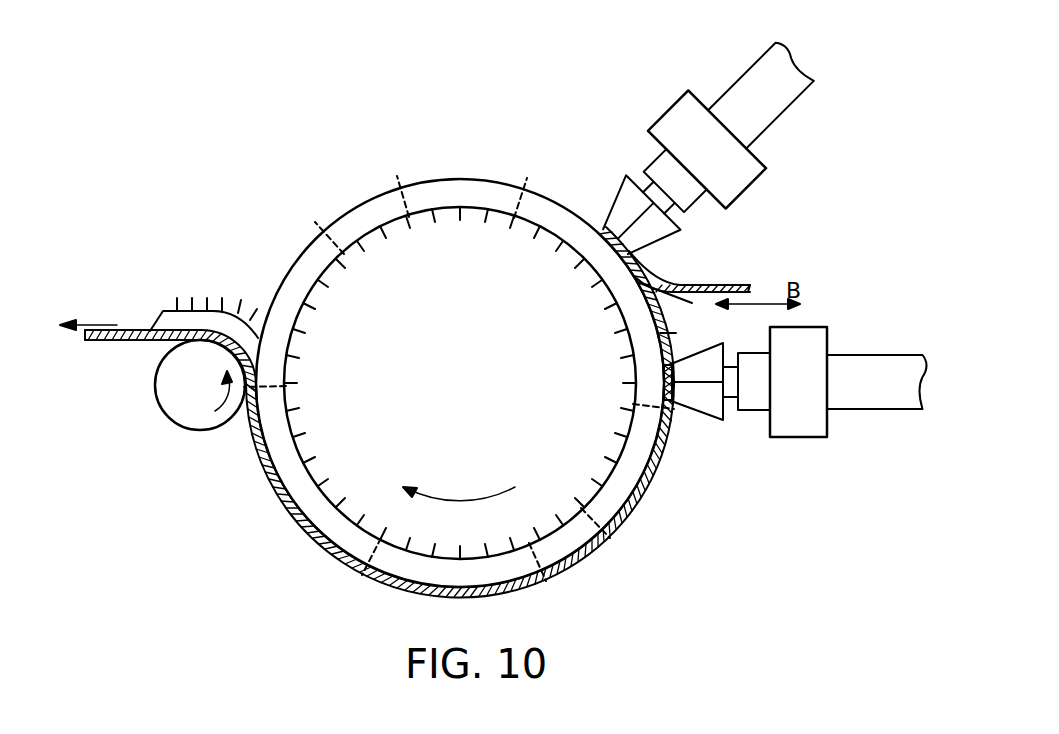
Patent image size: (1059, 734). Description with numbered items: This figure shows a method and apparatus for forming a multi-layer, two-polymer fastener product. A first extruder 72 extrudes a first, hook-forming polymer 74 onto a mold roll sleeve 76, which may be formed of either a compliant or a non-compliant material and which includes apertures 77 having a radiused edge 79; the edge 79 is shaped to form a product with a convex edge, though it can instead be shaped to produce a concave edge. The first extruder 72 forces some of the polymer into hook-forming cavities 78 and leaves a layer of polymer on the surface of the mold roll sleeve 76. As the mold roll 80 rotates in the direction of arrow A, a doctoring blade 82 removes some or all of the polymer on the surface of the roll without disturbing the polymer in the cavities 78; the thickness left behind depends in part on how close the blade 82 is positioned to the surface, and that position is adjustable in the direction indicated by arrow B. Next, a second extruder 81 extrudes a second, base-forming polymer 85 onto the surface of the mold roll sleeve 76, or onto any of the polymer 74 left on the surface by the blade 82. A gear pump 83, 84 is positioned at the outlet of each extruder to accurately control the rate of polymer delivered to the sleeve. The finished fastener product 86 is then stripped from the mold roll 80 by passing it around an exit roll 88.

The first extruder 72 is at (737, 176).
The first, hook-forming polymer 74 is at (600, 255).
The mold roll sleeve 76 is at (557, 215).
The apertures 77 is at (461, 178).
The hook-forming cavities 78 is at (306, 320).
The radiused edge 79 is at (400, 190).
The mold roll 80 is at (475, 402).
The second extruder 81 is at (747, 390).
The doctoring blade 82 is at (684, 304).
The gear pump 83 is at (756, 185).
The gear pump 84 is at (797, 441).
The second, base-forming polymer 85 is at (655, 385).
The finished fastener product 86 is at (153, 286).
The exit roll 88 is at (172, 410).